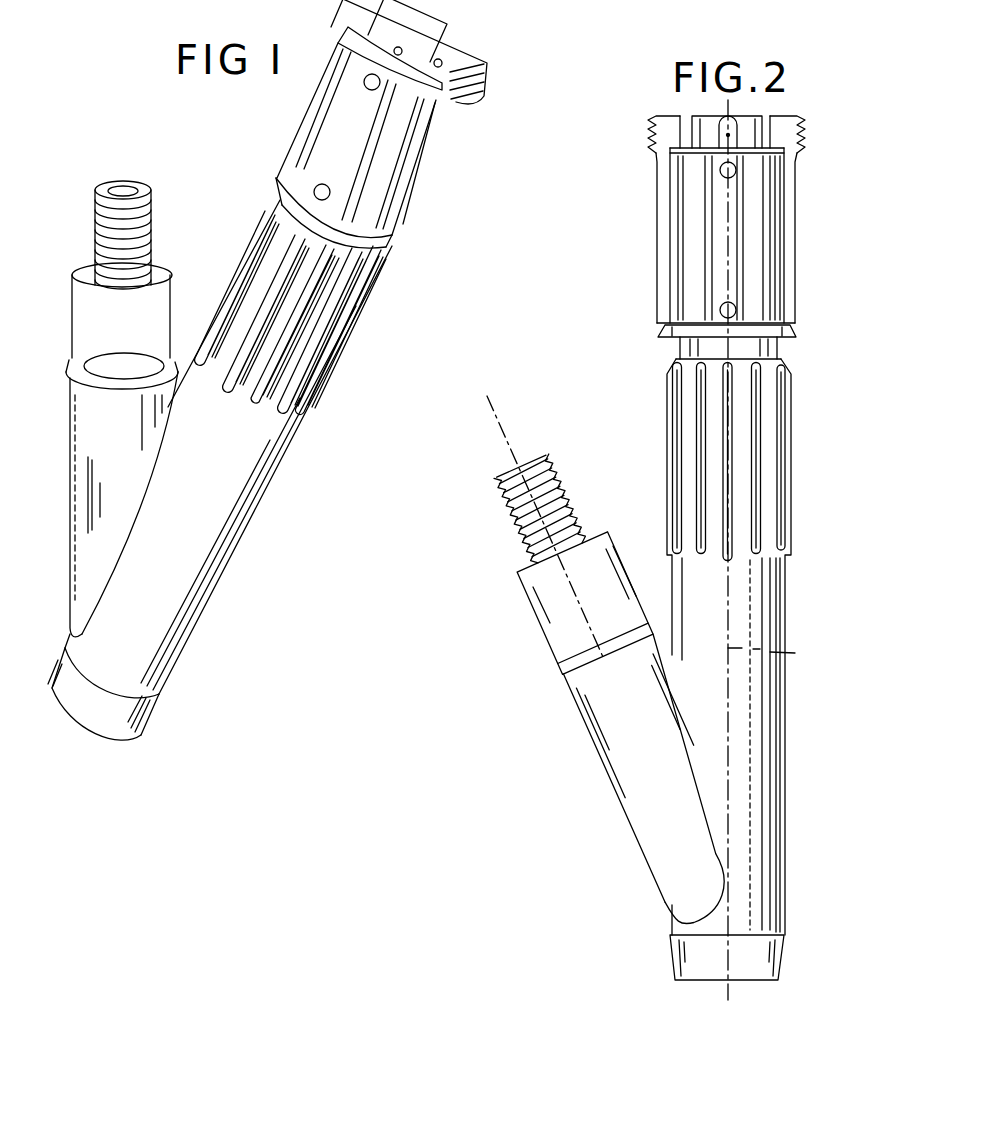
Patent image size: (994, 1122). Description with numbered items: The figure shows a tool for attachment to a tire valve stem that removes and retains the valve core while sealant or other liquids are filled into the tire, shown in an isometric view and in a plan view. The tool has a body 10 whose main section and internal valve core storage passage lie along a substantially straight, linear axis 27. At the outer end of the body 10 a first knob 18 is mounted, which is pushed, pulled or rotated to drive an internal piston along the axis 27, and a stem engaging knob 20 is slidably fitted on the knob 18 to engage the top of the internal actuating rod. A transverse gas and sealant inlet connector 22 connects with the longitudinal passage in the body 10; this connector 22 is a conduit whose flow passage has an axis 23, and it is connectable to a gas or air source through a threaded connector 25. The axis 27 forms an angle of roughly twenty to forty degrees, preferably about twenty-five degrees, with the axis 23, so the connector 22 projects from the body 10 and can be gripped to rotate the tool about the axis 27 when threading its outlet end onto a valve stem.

In FIG. 1, the body 10 is at (262, 495).
In FIG. 2, the body 10 is at (787, 606).
In FIG. 1, the first knob 18 is at (373, 178).
In FIG. 2, the first knob 18 is at (760, 190).
In FIG. 1, the stem engaging knob 20 is at (484, 84).
In FIG. 2, the stem engaging knob 20 is at (800, 140).
In FIG. 1, the gas and sealant inlet connector 22 is at (70, 430).
In FIG. 2, the gas and sealant inlet connector 22 is at (583, 733).
In FIG. 2, the axis 23 is at (513, 433).
In FIG. 1, the threaded connector 25 is at (147, 230).
In FIG. 2, the threaded connector 25 is at (569, 497).
In FIG. 2, the axis 27 is at (782, 652).